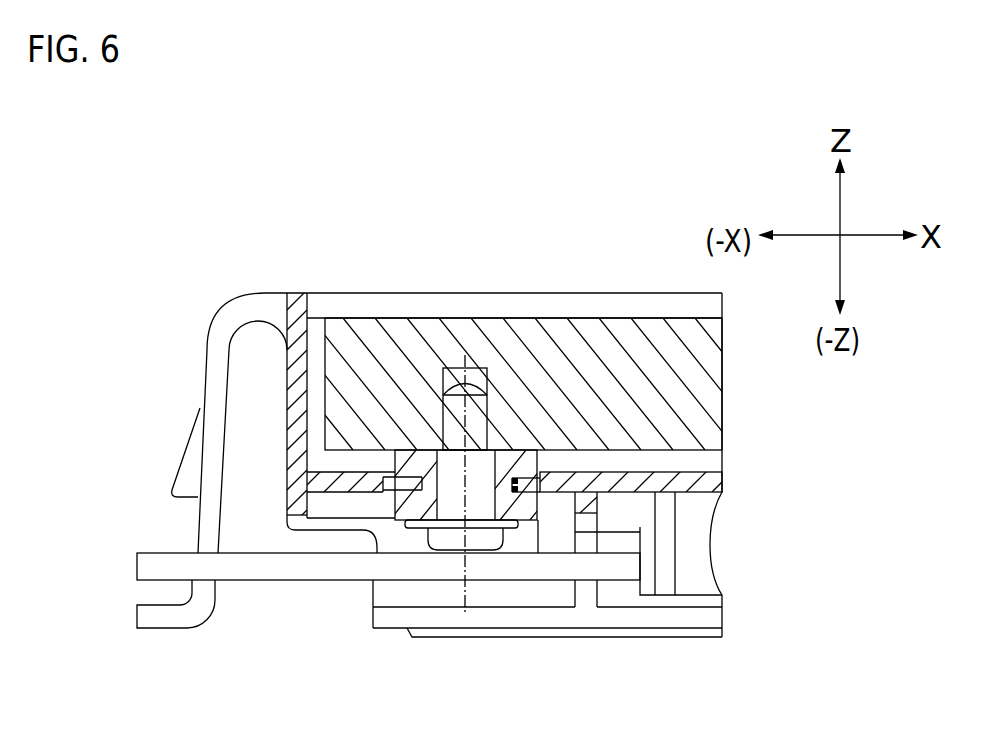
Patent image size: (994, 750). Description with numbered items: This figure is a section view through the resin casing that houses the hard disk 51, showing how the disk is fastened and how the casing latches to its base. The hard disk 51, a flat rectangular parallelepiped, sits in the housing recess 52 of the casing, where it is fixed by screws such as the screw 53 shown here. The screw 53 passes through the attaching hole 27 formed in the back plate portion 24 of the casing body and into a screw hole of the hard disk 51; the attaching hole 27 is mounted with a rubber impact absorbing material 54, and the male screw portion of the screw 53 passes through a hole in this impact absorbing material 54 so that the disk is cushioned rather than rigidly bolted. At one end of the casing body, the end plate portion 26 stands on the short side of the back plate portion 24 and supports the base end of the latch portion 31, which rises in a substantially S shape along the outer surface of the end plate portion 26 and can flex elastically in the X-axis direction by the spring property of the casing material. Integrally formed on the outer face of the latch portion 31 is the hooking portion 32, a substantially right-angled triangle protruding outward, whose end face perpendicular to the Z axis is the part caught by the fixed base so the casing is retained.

The back plate portion 24 is at (708, 484).
The end plate portion 26 is at (303, 400).
The attaching hole 27 is at (516, 483).
The latch portion 31 is at (203, 513).
The hooking portion 32 is at (183, 472).
The hard disk 51 is at (549, 386).
The housing recess 52 is at (447, 308).
The screw 53 is at (483, 538).
The impact absorbing material 54 is at (422, 502).